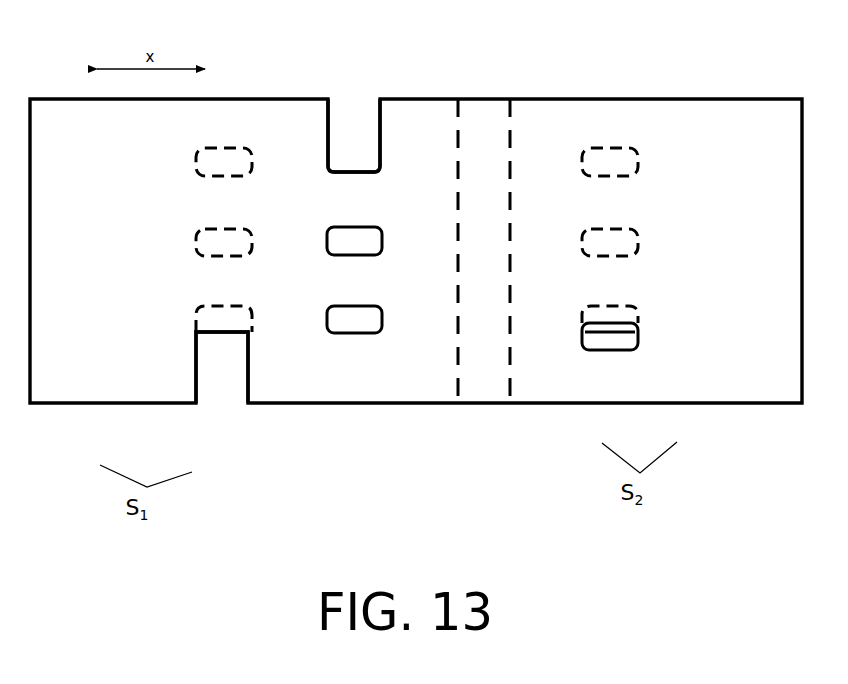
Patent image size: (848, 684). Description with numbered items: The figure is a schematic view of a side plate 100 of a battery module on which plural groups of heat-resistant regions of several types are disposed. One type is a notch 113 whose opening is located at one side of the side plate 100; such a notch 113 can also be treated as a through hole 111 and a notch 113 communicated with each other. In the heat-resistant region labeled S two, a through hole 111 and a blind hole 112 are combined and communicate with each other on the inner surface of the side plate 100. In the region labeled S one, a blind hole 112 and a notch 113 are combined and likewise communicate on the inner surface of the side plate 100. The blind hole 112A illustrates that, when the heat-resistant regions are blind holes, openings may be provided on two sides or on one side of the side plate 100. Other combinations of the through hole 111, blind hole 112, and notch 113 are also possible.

The side plate 100 is at (728, 116).
The through hole 111 is at (607, 344).
The blind hole 112 is at (610, 168).
The blind hole 112A is at (490, 161).
The notch 113 is at (358, 161).